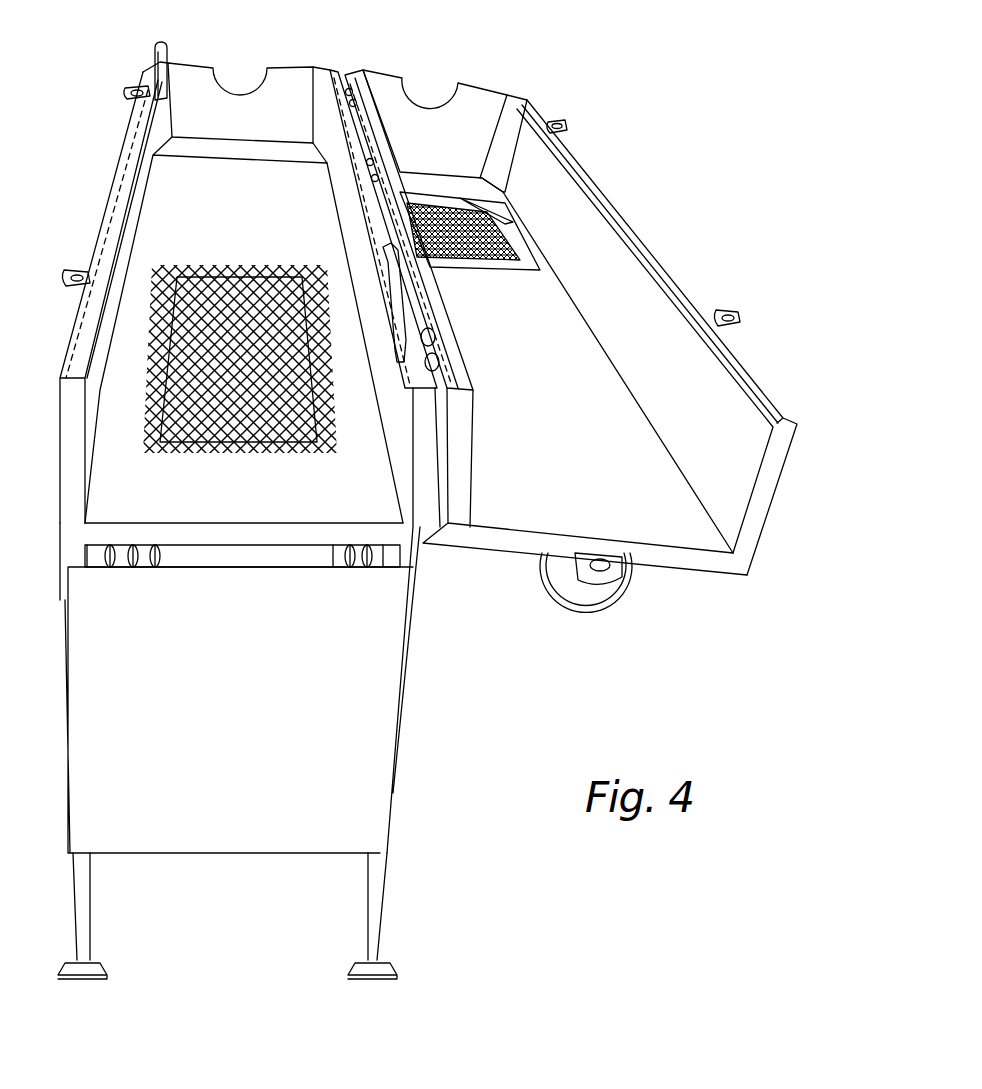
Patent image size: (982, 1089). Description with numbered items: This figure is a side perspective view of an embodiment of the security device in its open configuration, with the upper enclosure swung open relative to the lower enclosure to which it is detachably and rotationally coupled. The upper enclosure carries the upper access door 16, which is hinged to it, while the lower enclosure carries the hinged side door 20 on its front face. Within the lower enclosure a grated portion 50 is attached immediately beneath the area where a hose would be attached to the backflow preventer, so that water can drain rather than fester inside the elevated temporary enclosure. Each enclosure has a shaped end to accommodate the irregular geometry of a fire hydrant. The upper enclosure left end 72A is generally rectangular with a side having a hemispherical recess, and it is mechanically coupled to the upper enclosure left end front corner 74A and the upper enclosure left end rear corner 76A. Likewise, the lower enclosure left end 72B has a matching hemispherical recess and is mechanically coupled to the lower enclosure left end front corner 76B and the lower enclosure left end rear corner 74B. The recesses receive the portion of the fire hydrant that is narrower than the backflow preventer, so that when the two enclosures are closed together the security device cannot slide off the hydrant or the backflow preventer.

The upper access door 16 is at (487, 234).
The side door 20 is at (209, 711).
The grated portion 50 is at (231, 310).
The upper enclosure left end 72A is at (465, 113).
The lower enclosure left end 72B is at (287, 93).
The upper enclosure left end front corner 74A is at (507, 117).
The lower enclosure left end rear corner 74B is at (322, 100).
The upper enclosure left end rear corner 76A is at (395, 78).
The lower enclosure left end front corner 76B is at (160, 117).